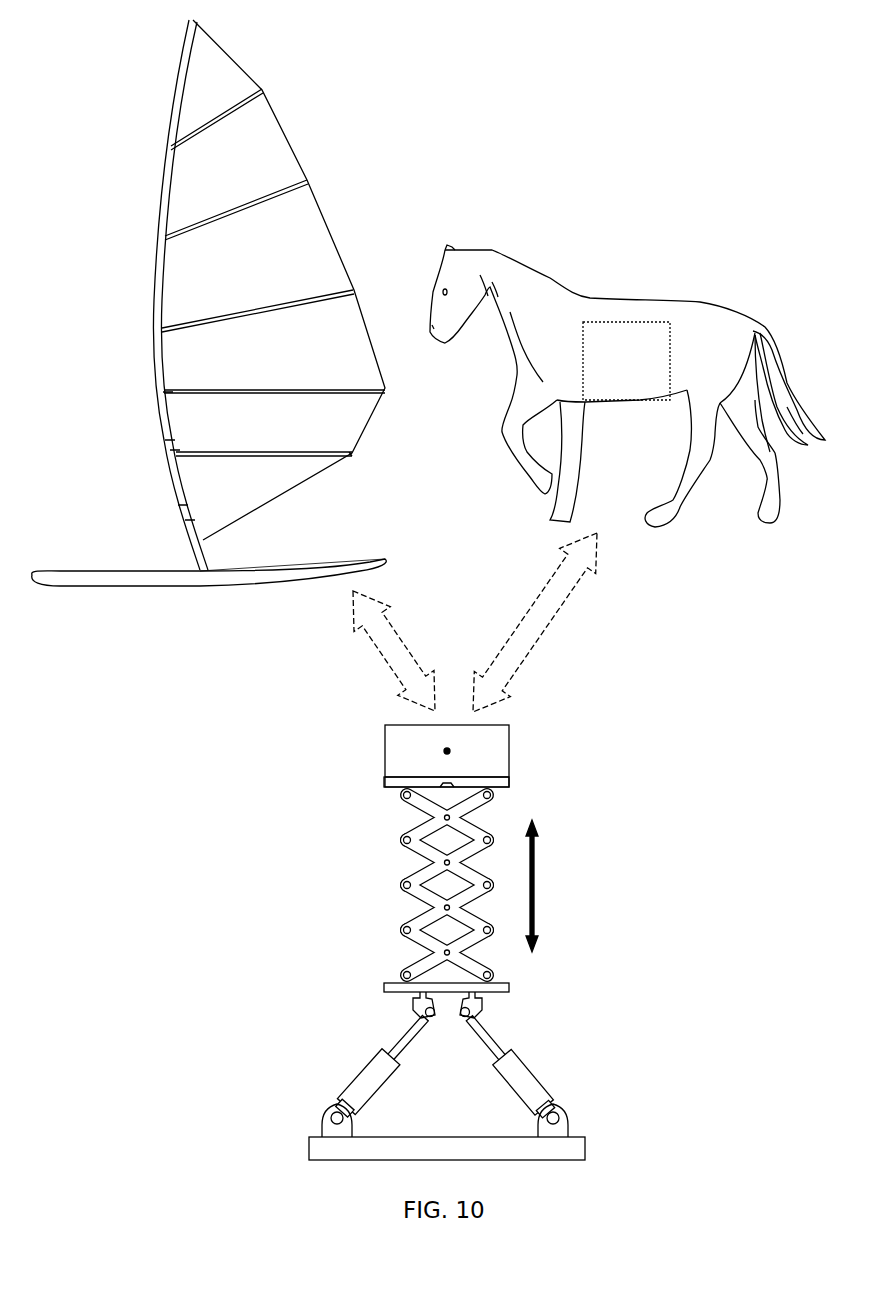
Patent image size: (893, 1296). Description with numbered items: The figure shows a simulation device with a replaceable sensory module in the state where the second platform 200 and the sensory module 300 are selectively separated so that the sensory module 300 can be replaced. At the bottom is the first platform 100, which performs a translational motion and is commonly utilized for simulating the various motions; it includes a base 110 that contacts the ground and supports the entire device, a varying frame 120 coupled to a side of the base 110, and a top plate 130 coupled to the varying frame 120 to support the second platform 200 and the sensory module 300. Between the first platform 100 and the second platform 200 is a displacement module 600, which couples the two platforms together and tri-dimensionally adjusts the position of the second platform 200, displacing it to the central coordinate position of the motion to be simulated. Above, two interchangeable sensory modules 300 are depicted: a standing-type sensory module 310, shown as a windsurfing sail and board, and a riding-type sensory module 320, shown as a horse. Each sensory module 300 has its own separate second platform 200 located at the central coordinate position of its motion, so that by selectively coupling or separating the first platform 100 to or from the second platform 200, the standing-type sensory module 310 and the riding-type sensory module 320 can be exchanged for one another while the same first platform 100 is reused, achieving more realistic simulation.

The first platform 100 is at (222, 982).
The base 110 is at (309, 1141).
The varying frame 120 is at (363, 1064).
The top plate 130 is at (384, 988).
The second platform 200 is at (385, 752).
The sensory module 300 is at (494, 155).
The standing-type sensory module 310 is at (308, 232).
The riding-type sensory module 320 is at (490, 250).
The displacement module 600 is at (413, 867).